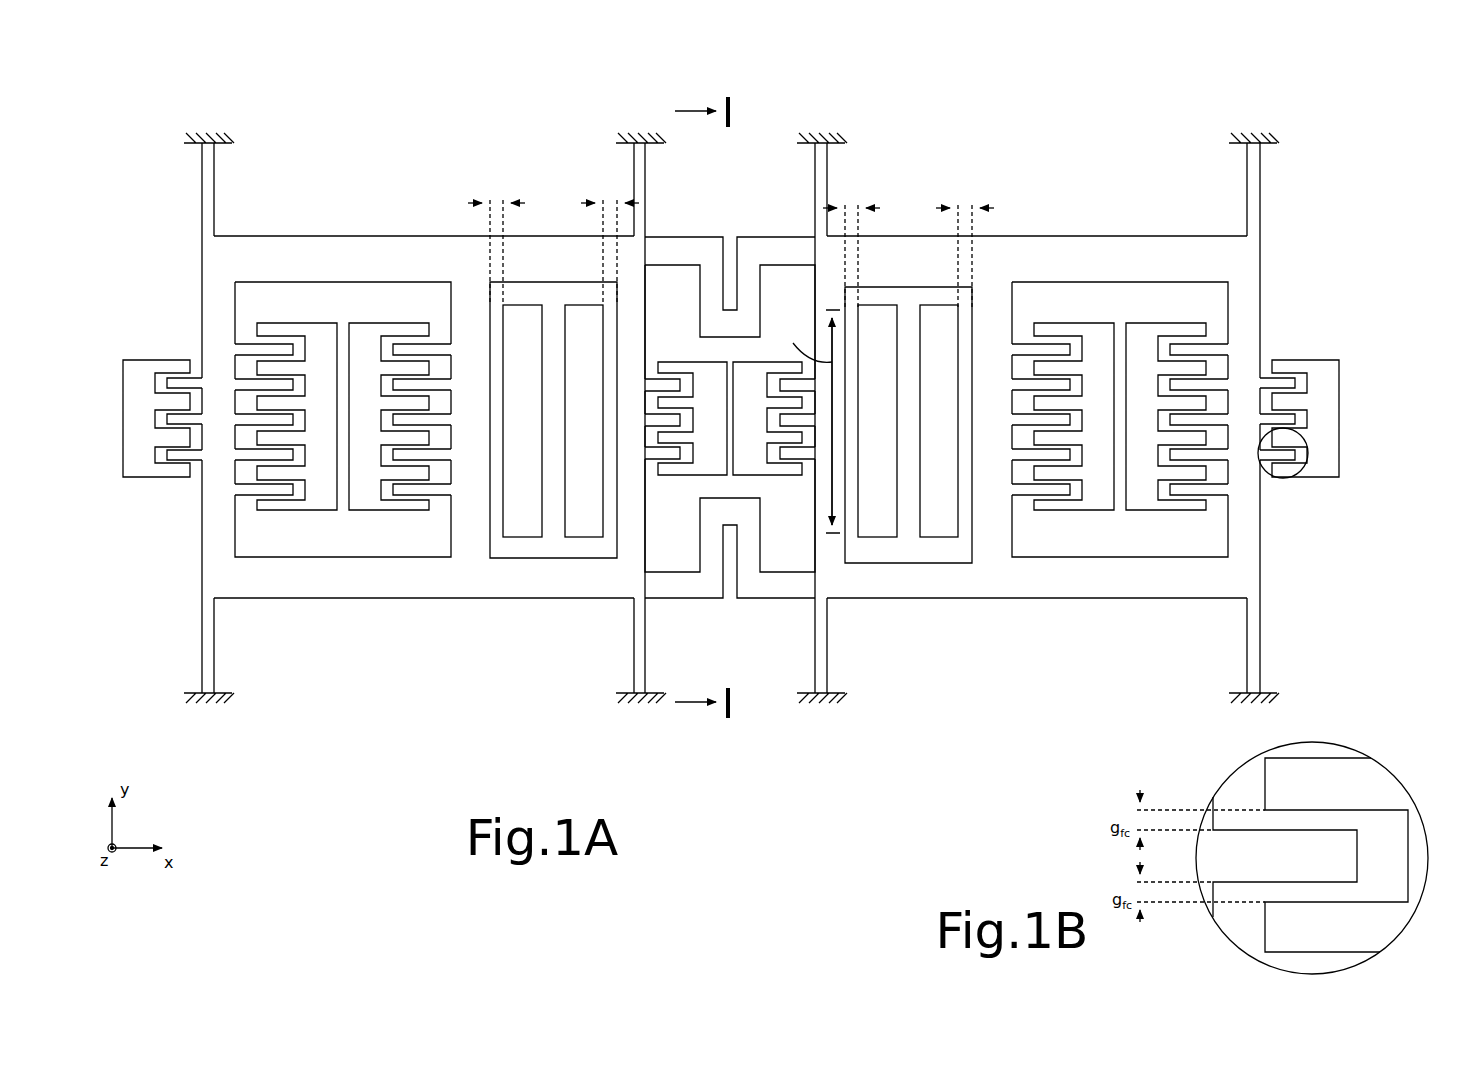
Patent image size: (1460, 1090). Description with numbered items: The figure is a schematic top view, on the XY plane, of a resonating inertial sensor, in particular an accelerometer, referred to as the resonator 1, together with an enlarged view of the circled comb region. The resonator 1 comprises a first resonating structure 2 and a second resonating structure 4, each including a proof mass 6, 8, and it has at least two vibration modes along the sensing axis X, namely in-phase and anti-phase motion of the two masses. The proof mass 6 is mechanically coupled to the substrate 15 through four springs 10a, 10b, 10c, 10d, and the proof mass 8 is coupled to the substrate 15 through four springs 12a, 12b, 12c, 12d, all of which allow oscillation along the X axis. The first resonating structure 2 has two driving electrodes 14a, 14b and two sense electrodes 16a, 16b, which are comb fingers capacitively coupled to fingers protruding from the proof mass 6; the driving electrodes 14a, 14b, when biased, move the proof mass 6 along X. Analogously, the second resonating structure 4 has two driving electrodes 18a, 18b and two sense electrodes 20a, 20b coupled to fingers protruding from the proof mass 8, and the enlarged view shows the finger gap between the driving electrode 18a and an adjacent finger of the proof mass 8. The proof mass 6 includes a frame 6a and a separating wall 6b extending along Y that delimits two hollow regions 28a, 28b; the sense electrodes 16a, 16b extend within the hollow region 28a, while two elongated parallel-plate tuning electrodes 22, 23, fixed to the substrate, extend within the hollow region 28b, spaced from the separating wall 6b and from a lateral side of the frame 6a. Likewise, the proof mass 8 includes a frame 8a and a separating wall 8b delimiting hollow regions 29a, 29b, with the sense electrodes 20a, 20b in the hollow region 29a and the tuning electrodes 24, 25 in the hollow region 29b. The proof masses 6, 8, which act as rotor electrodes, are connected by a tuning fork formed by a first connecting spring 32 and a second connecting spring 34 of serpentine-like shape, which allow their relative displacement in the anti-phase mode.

In FIG. 1A, the resonator 1 is at (106, 134).
In FIG. 1A, the first resonating structure 2 is at (340, 190).
In FIG. 1A, the second resonating structure 4 is at (1077, 192).
In FIG. 1A, the proof mass 6 is at (280, 228).
In FIG. 1A, the frame 6a is at (410, 245).
In FIG. 1A, the separating wall 6b is at (470, 512).
In FIG. 1A, the proof mass 8 is at (928, 230).
In FIG. 1A, the frame 8a is at (1128, 262).
In FIG. 1B, the frame 8a is at (1235, 795).
In FIG. 1A, the separating wall 8b is at (990, 570).
In FIG. 1A, the spring 10a is at (202, 188).
In FIG. 1A, the spring 10b is at (202, 652).
In FIG. 1A, the spring 10c is at (634, 190).
In FIG. 1A, the spring 10d is at (634, 653).
In FIG. 1A, the spring 12a is at (1260, 188).
In FIG. 1A, the spring 12b is at (1262, 625).
In FIG. 1A, the spring 12c is at (827, 192).
In FIG. 1A, the spring 12d is at (827, 672).
In FIG. 1A, the driving electrode 14a is at (130, 403).
In FIG. 1A, the driving electrode 14b is at (710, 455).
In FIG. 1A, the substrate 15 is at (228, 138).
In FIG. 1A, the sense electrode 16a is at (318, 495).
In FIG. 1A, the sense electrode 16b is at (370, 495).
In FIG. 1A, the driving electrode 18a is at (1318, 365).
In FIG. 1B, the driving electrode 18a is at (1380, 778).
In FIG. 1A, the driving electrode 18b is at (753, 458).
In FIG. 1A, the sense electrode 20a is at (1092, 495).
In FIG. 1A, the sense electrode 20b is at (1142, 495).
In FIG. 1A, the tuning electrode 22 is at (523, 520).
In FIG. 1A, the tuning electrode 23 is at (590, 510).
In FIG. 1A, the tuning electrode 24 is at (880, 527).
In FIG. 1A, the tuning electrode 25 is at (930, 527).
In FIG. 1A, the hollow region 28a is at (352, 300).
In FIG. 1A, the hollow region 28b is at (553, 300).
In FIG. 1A, the hollow region 29a is at (1058, 262).
In FIG. 1A, the hollow region 29b is at (912, 300).
In FIG. 1A, the first connecting spring 32 is at (712, 272).
In FIG. 1A, the second connecting spring 34 is at (718, 588).